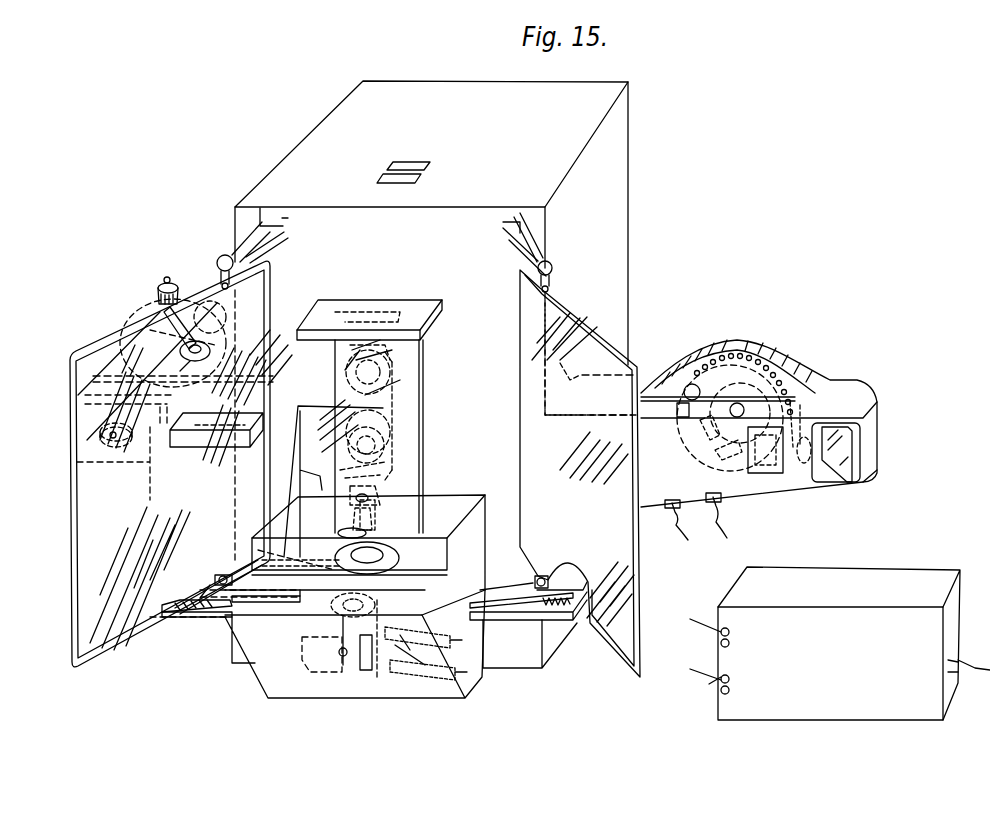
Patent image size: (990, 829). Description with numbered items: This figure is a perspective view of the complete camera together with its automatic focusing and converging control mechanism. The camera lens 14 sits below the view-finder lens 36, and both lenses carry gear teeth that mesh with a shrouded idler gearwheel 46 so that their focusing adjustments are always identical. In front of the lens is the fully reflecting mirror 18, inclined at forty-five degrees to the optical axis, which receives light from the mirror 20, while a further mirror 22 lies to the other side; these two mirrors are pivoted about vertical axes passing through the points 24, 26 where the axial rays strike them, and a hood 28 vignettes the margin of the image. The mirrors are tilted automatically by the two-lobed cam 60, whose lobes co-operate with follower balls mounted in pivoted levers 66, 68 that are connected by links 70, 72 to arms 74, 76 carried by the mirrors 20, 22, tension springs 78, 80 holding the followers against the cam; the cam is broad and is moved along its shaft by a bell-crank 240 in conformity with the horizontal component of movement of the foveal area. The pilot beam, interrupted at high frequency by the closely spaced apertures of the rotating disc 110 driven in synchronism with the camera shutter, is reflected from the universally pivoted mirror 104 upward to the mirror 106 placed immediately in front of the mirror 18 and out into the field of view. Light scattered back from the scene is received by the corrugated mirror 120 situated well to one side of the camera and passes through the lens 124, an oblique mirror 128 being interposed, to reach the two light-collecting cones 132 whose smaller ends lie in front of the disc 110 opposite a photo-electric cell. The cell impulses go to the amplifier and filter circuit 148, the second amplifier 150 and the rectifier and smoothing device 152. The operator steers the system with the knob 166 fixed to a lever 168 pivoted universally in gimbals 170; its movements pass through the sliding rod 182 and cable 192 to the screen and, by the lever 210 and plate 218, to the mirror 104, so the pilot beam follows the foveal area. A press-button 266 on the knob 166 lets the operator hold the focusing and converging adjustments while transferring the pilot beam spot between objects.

The lens 14 is at (400, 446).
The mirror 18 is at (424, 404).
The mirror 20 is at (586, 327).
The mirror 22 is at (86, 518).
The point 24 is at (553, 286).
The point 26 is at (221, 279).
The hood 28 is at (365, 302).
The second lens 36 is at (418, 360).
The shrouded idler gearwheel 46 is at (402, 393).
The two-lobed cam 60 is at (430, 556).
The pivoted lever 66 is at (434, 603).
The pivoted lever 68 is at (256, 555).
The link 70 is at (519, 622).
The link 72 is at (218, 620).
The arm 74 is at (534, 589).
The arm 76 is at (195, 617).
The tension spring 78 is at (557, 608).
The tension spring 80 is at (178, 612).
The universally pivoted mirror 104 is at (338, 616).
The mirror 106 is at (325, 422).
The disc 110 is at (760, 371).
The mirror 120 is at (848, 450).
The lens 124 is at (803, 465).
The oblique mirror 128 is at (773, 469).
The cones 132 is at (793, 453).
The amplifier and filter circuit arrangement 148 is at (840, 669).
The second amplifier 150 is at (840, 669).
The rectifier and smoothing device 152 is at (772, 716).
The knob 166 is at (160, 284).
The lever 168 is at (210, 302).
The gimbals 170 is at (175, 350).
The rod 182 is at (270, 376).
The cable 192 is at (132, 462).
The lever 210 is at (345, 623).
The plate 218 is at (342, 663).
The bell-crank 240 is at (412, 508).
The press-button 266 is at (167, 277).